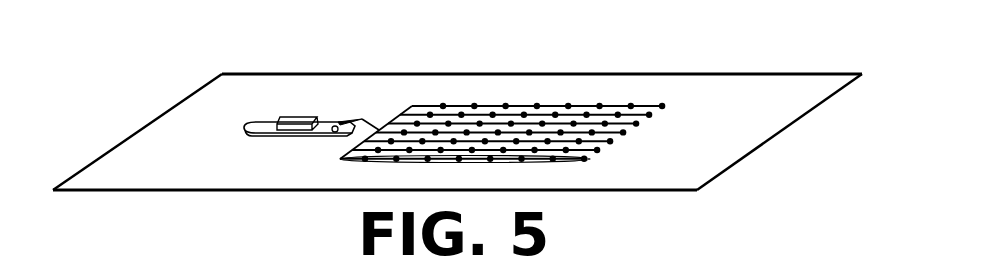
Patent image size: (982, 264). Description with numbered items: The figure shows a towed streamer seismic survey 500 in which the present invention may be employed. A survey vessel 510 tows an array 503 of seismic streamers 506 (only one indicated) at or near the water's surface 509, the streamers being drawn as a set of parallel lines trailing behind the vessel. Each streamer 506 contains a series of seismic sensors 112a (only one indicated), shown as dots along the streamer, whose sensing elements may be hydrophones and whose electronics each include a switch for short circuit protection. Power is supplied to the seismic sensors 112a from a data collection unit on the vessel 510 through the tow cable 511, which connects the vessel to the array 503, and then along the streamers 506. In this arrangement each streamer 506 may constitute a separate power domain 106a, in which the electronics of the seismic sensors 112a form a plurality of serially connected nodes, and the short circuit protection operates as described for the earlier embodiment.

The survey 500 is at (130, 44).
The water's surface 509 is at (845, 80).
The array 503 is at (411, 106).
The seismic sensor 112a is at (446, 105).
The seismic streamer 506 is at (659, 103).
The power domain 106a is at (590, 160).
The survey vessel 510 is at (270, 119).
The tow cable 511 is at (364, 119).